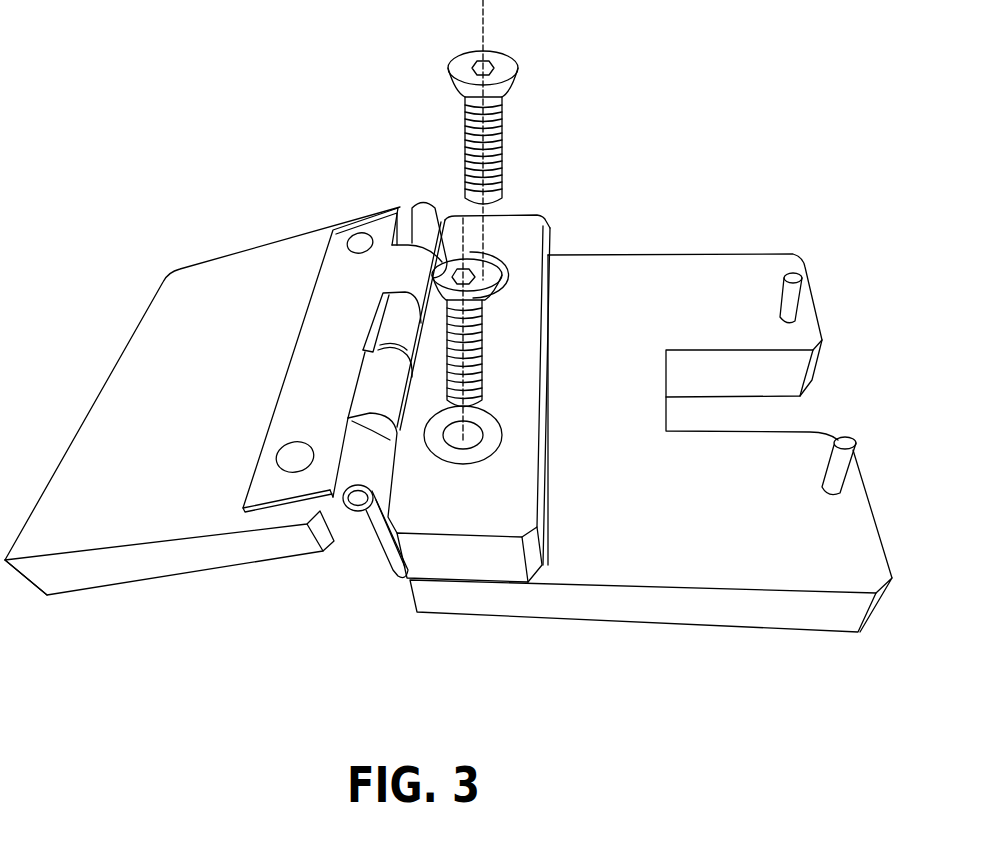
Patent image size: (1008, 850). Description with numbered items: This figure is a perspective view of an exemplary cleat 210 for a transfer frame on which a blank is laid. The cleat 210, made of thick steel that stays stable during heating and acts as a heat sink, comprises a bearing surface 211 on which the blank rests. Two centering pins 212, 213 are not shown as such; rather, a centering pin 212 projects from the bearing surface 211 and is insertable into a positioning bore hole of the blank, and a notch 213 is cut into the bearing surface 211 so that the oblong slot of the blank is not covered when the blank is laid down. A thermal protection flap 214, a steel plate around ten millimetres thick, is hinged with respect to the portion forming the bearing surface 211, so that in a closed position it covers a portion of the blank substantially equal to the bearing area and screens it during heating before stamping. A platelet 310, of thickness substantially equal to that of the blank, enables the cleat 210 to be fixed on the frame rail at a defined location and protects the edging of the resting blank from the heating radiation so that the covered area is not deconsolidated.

The cleat 210 is at (745, 95).
The bearing surface 211 is at (625, 333).
The centering pin 212 is at (845, 438).
The notch 213 is at (697, 425).
The thermal protection flap 214 is at (237, 297).
The platelet 310 is at (517, 345).